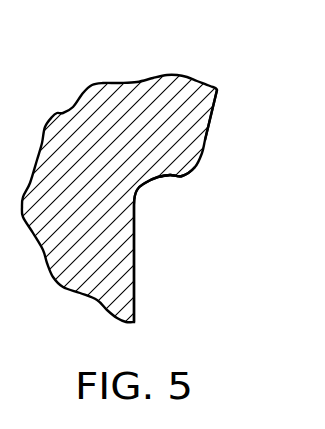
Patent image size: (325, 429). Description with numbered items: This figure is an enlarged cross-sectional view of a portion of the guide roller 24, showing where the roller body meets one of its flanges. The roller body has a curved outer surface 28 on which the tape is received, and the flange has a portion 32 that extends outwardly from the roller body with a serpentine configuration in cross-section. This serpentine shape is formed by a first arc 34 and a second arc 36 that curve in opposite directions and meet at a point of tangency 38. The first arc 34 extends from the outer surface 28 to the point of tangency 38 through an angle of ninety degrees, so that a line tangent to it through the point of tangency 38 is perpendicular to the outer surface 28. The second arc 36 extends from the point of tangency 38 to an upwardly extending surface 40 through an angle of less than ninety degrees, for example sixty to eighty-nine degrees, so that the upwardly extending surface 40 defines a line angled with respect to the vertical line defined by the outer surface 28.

The guide roller 24 is at (203, 55).
The outer surface 28 is at (139, 290).
The portion 32 is at (186, 195).
The first arc 34 is at (148, 192).
The second arc 36 is at (185, 179).
The point of tangency 38 is at (166, 177).
The upwardly extending surface 40 is at (208, 128).